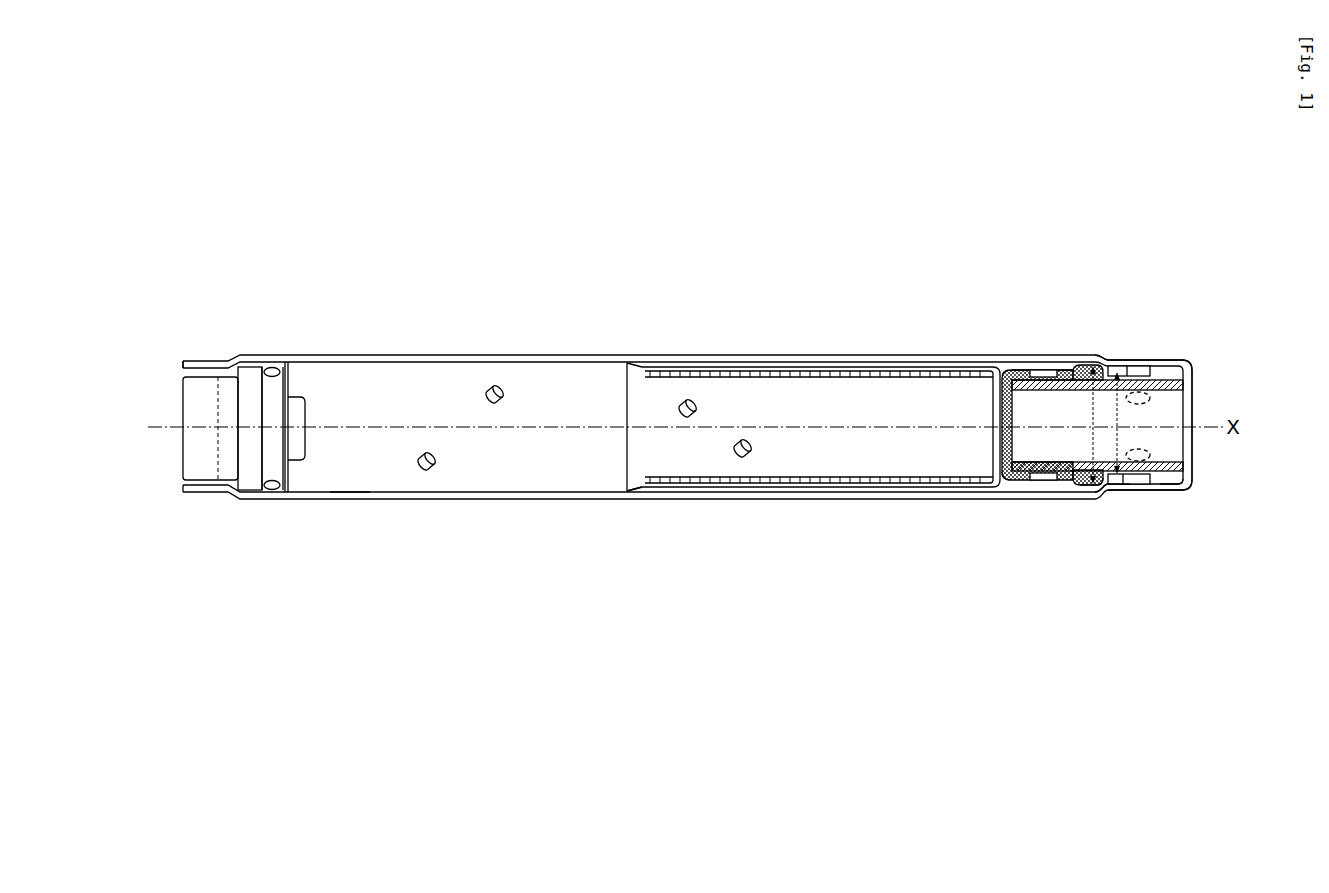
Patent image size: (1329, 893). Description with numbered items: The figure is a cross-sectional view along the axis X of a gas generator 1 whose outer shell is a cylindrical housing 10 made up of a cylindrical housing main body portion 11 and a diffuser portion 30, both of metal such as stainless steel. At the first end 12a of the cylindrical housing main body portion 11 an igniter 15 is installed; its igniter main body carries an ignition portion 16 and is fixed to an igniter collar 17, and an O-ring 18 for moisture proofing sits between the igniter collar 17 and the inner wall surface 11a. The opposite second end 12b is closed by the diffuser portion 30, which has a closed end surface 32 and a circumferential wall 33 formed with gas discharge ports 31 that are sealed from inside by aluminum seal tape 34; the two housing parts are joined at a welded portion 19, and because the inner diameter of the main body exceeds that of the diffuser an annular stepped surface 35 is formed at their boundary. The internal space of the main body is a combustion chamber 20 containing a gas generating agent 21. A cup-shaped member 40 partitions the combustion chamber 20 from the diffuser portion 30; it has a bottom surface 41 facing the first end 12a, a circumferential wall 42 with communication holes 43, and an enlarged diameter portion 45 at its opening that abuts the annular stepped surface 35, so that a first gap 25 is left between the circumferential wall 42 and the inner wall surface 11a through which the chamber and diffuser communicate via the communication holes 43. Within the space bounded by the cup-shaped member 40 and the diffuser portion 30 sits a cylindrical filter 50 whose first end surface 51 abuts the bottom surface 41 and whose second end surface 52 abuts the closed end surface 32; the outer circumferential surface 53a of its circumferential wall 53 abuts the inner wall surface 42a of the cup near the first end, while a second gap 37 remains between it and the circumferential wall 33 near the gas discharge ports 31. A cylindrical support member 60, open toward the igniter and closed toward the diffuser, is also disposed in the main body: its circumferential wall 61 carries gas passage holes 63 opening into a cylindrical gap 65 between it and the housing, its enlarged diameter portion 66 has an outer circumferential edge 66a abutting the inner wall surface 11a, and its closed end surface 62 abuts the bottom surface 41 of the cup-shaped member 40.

The gas generator 1 is at (500, 338).
The cylindrical housing 10 is at (637, 342).
The cylindrical housing main body portion 11 is at (527, 499).
The inner wall surface 11a is at (350, 486).
The first end 12a is at (178, 361).
The second end 12b is at (1103, 494).
The igniter 15 is at (178, 405).
The ignition portion 16 is at (303, 394).
The igniter collar 17 is at (243, 488).
The O-ring 18 is at (272, 491).
The welded portion 19 is at (1107, 362).
The combustion chamber 20 is at (533, 418).
The gas generating agent 21 is at (484, 392).
The first gap 25 is at (1030, 371).
The diffuser portion 30 is at (1194, 359).
The gas discharge ports 31 is at (1140, 364).
The closed end surface 32 is at (1175, 402).
The circumferential wall 33 is at (1157, 484).
The seal tape 34 is at (1120, 486).
The annular stepped surface 35 is at (1093, 489).
The second gap 37 is at (1173, 378).
The cup-shaped member 40 is at (1010, 364).
The bottom surface 41 is at (1018, 408).
The circumferential wall 42 is at (1046, 481).
The inner wall surface 42a is at (1075, 483).
The communication holes 43 is at (1048, 379).
The enlarged diameter portion 45 is at (1082, 365).
The cylindrical filter 50 is at (1004, 486).
The first end surface 51 is at (1018, 481).
The second end surface 52 is at (1181, 467).
The circumferential wall 53 is at (1178, 486).
The outer circumferential surface 53a is at (1078, 488).
The cylindrical support member 60 is at (933, 365).
The circumferential wall 61 is at (807, 367).
The closed end surface 62 is at (997, 440).
The gas passage holes 63 is at (733, 378).
The cylindrical gap 65 is at (863, 488).
The enlarged diameter portion 66 is at (633, 371).
The outer circumferential edge 66a is at (627, 491).